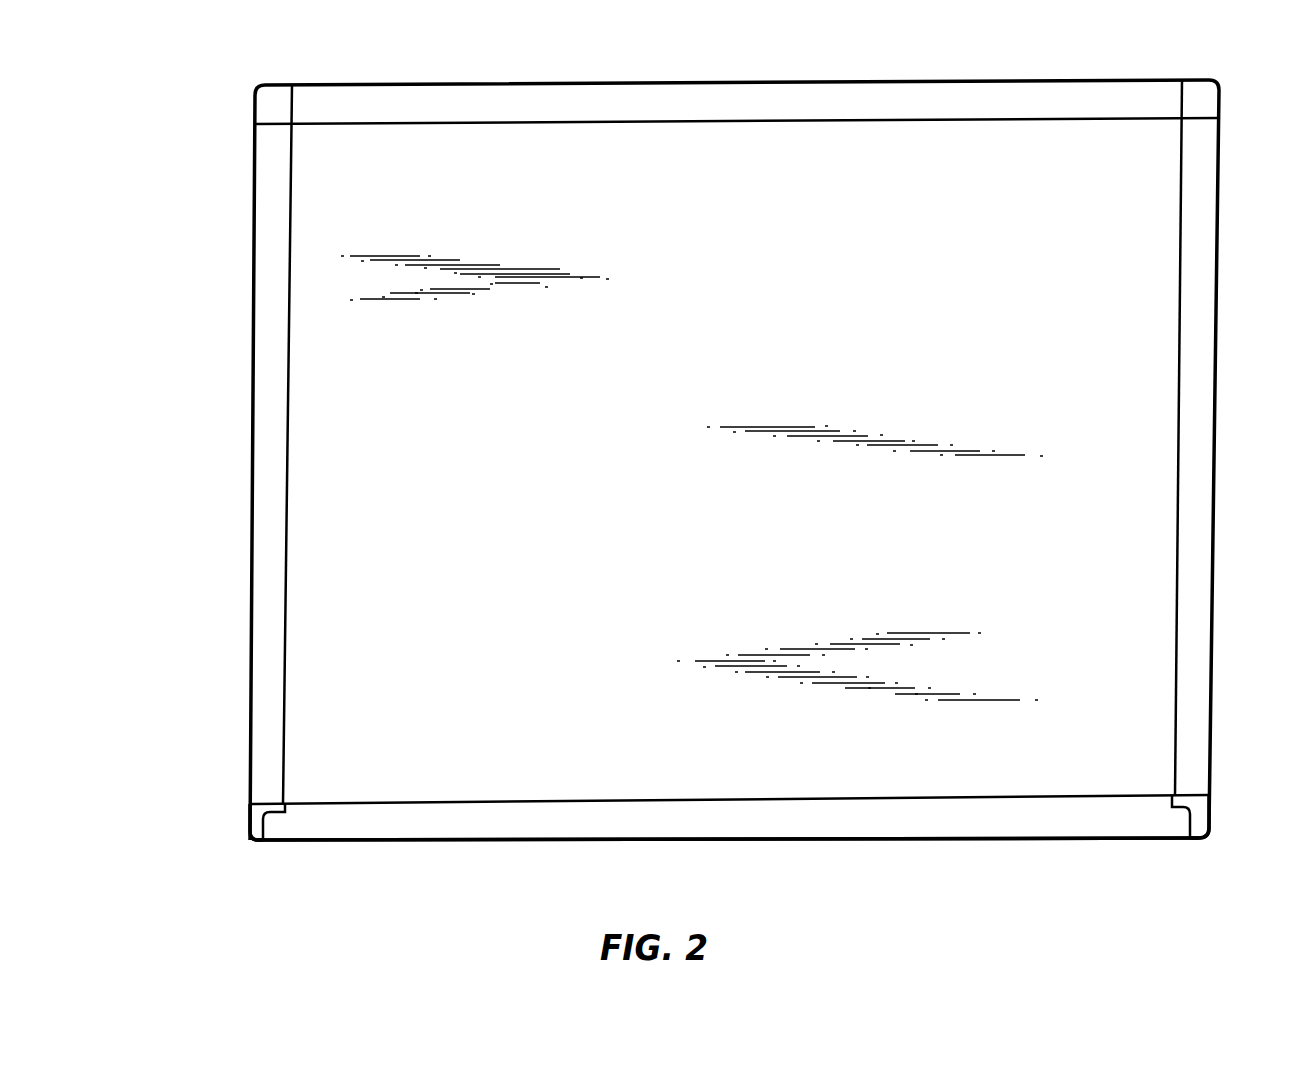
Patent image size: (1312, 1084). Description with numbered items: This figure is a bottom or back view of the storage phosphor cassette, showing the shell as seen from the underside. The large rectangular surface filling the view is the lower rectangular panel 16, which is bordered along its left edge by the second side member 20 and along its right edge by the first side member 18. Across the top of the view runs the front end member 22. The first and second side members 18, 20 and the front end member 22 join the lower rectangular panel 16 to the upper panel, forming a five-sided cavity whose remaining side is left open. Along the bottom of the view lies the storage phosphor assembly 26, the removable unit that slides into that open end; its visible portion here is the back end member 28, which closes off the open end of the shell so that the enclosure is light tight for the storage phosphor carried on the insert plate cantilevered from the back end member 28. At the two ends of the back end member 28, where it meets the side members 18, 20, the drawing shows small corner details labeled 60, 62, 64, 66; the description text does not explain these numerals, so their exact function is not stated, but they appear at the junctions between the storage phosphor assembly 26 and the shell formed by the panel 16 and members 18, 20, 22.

The lower rectangular panel 16 is at (1153, 643).
The first side member 18 is at (1205, 540).
The second side member 20 is at (260, 618).
The front end member 22 is at (962, 103).
The storage phosphor assembly 26 is at (996, 845).
The back end member 28 is at (937, 828).
The left corner 60 is at (254, 825).
The right corner 62 is at (1208, 820).
The left end clip 64 is at (278, 835).
The right end clip 66 is at (1182, 828).